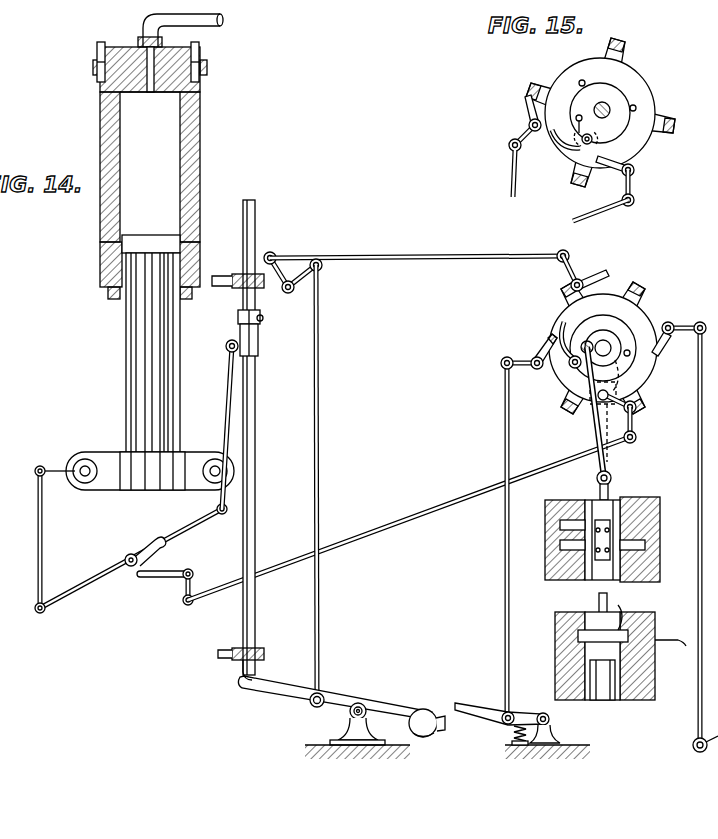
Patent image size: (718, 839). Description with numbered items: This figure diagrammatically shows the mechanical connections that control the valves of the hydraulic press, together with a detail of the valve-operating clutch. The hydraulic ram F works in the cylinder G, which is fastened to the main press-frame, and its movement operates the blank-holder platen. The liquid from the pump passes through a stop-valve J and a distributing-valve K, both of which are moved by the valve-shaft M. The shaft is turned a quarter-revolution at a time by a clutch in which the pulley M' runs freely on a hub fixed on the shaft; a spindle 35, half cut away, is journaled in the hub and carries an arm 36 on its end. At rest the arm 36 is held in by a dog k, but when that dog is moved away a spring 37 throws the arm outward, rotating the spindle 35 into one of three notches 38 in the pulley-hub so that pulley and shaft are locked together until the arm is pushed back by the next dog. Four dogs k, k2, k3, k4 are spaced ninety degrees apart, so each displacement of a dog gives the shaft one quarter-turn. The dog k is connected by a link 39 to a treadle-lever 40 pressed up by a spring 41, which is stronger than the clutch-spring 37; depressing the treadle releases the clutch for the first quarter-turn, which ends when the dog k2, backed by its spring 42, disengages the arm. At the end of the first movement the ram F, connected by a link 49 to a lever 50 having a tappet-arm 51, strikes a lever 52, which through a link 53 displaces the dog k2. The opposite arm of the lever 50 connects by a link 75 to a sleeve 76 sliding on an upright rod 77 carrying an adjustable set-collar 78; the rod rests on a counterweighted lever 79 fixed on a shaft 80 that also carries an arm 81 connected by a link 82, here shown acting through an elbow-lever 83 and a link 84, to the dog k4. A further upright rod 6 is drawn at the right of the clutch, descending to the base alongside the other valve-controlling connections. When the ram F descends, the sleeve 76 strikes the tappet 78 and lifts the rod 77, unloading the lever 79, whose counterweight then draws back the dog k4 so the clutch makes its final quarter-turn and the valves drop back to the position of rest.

In FIG. 14, the cylinder G is at (158, 156).
In FIG. 14, the hydraulic plunger or ram F is at (125, 377).
In FIG. 14, the link 49 is at (55, 537).
In FIG. 14, the lever 50 is at (90, 587).
In FIG. 14, the tappet-arm 51 is at (158, 542).
In FIG. 14, the lever 52 is at (165, 587).
In FIG. 14, the link 53 is at (409, 518).
In FIG. 14, the link 75 is at (228, 414).
In FIG. 14, the sleeve 76 is at (259, 348).
In FIG. 14, the upright rod 77 is at (245, 437).
In FIG. 14, the adjustable tappet or set-collar 78 is at (238, 318).
In FIG. 14, the counterweighted lever 79 is at (293, 697).
In FIG. 14, the shaft 80 is at (366, 705).
In FIG. 14, the arm 81 is at (338, 702).
In FIG. 14, the link 82 is at (320, 501).
In FIG. 14, the elbow-lever 83 is at (298, 268).
In FIG. 14, the link 84 is at (419, 253).
In FIG. 14, the link 39 is at (505, 580).
In FIG. 14, the treadle-lever 40 is at (478, 708).
In FIG. 14, the spring 41 is at (512, 734).
In FIG. 14, the spring 42 is at (642, 425).
In FIG. 14, the rod 6 is at (702, 626).
In FIG. 14, the distributing-valve K is at (652, 520).
In FIG. 14, the stop-valve J is at (620, 646).
In FIG. 15, the valve-shaft M is at (602, 98).
In FIG. 14, the pulley M' is at (603, 372).
In FIG. 15, the pulley M' is at (606, 112).
In FIG. 15, the spindle 35 is at (592, 137).
In FIG. 14, the arm 36 is at (572, 332).
In FIG. 15, the arm 36 is at (560, 147).
In FIG. 15, the spring 37 is at (565, 116).
In FIG. 15, the notch 38 is at (584, 81).
In FIG. 14, the dog k is at (540, 350).
In FIG. 15, the dog k is at (528, 113).
In FIG. 14, the dog k2 is at (582, 420).
In FIG. 15, the dog k2 is at (613, 170).
In FIG. 14, the dog k3 is at (660, 350).
In FIG. 14, the dog k4 is at (598, 274).